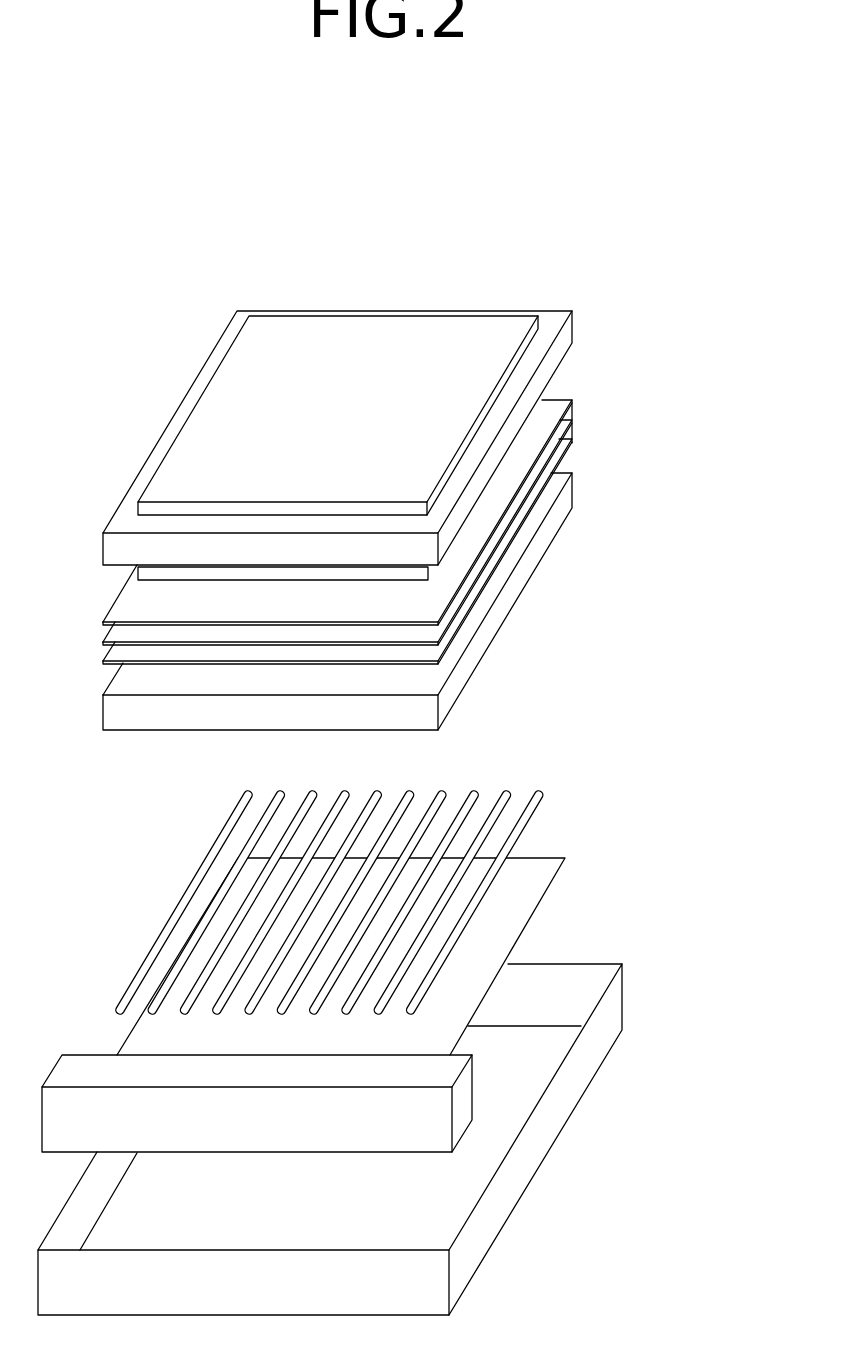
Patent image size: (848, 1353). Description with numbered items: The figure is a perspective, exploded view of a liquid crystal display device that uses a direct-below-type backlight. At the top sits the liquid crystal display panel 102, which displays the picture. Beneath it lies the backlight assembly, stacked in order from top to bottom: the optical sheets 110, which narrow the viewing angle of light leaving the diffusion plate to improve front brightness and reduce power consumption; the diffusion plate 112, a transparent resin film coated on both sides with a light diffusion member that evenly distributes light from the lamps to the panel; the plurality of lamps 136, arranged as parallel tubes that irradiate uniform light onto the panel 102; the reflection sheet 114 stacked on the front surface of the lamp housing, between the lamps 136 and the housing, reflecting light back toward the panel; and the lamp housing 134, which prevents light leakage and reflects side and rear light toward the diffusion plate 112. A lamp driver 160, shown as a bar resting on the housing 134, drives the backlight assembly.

The liquid crystal display panel 102 is at (560, 345).
The optical sheets 110 is at (587, 394).
The diffusion plate 112 is at (482, 634).
The reflection sheet 114 is at (542, 883).
The lamp housing 134 is at (613, 1010).
The lamps 136 is at (540, 795).
The lamp driver 160 is at (463, 1105).